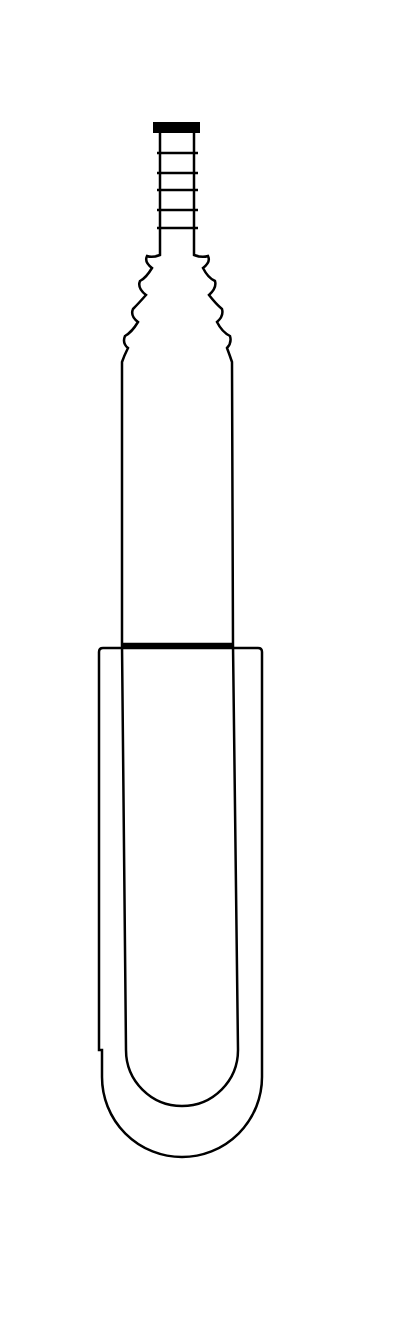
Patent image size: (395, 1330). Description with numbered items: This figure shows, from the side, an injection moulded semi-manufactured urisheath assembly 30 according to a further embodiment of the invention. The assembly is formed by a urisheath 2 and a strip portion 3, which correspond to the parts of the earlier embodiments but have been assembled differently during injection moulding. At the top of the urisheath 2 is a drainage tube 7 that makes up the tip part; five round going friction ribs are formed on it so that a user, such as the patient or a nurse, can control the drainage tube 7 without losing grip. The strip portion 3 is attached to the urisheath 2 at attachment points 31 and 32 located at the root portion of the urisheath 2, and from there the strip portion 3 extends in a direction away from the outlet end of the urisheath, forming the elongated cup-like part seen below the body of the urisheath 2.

The injection moulded semi-manufactured urisheath assembly 30 is at (114, 92).
The drainage tube 7 is at (187, 118).
The urisheath 2 is at (225, 392).
The attachment point 31 is at (116, 644).
The attachment point 32 is at (235, 639).
The strip portion 3 is at (252, 786).